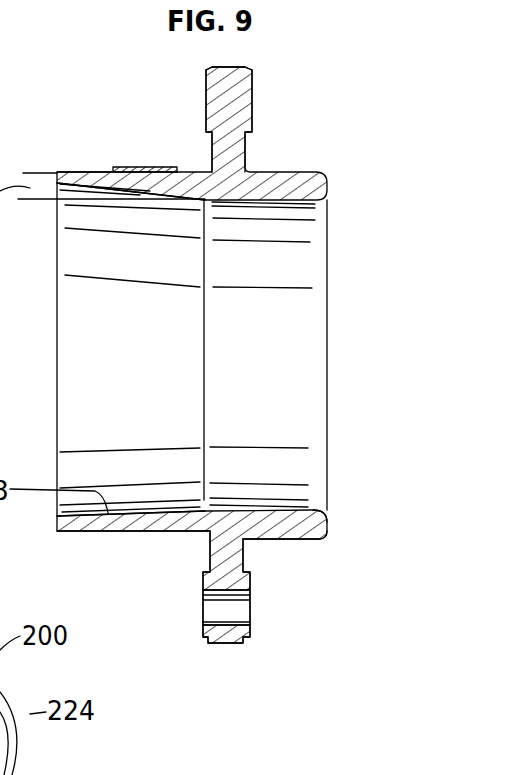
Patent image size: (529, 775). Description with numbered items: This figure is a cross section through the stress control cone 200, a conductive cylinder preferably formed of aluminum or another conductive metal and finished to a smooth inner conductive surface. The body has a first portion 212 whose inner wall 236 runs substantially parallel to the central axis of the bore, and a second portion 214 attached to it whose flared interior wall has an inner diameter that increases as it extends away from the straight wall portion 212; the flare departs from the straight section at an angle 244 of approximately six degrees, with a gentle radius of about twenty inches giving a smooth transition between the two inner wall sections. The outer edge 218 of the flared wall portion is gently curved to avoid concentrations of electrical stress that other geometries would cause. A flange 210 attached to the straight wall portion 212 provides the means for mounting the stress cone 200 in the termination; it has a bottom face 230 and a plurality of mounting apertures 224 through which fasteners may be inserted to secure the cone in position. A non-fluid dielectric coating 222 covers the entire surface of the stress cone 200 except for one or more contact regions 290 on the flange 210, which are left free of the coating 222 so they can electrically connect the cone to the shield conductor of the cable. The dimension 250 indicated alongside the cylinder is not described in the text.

The stress control cone 200 is at (310, 149).
The flange 210 is at (225, 645).
The first portion 212 is at (291, 540).
The second portion 214 is at (100, 531).
The outer edge 218 is at (58, 172).
The dielectric coating 222 is at (157, 167).
The mounting apertures 224 is at (202, 607).
The bottom face 230 is at (252, 114).
The inner wall 236 is at (278, 508).
The angle 244 is at (50, 155).
The height dimension 250 is at (328, 539).
The contact regions 290 is at (203, 88).